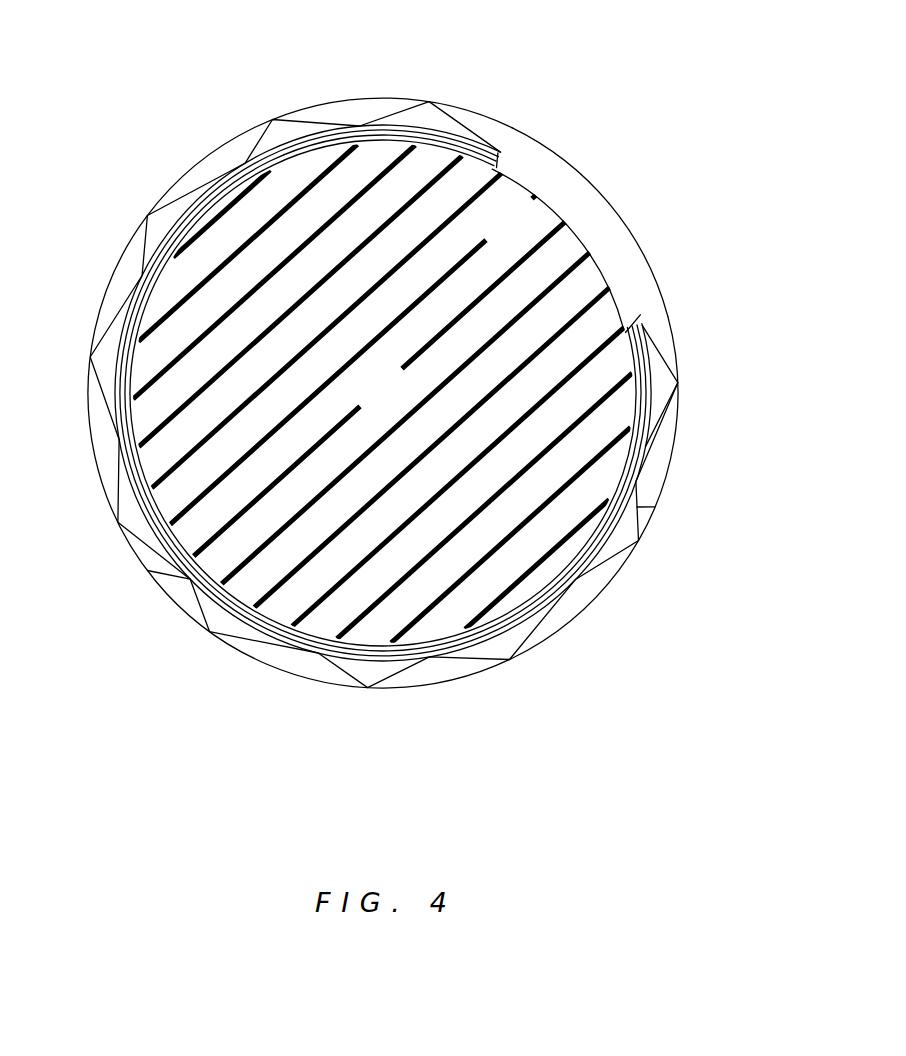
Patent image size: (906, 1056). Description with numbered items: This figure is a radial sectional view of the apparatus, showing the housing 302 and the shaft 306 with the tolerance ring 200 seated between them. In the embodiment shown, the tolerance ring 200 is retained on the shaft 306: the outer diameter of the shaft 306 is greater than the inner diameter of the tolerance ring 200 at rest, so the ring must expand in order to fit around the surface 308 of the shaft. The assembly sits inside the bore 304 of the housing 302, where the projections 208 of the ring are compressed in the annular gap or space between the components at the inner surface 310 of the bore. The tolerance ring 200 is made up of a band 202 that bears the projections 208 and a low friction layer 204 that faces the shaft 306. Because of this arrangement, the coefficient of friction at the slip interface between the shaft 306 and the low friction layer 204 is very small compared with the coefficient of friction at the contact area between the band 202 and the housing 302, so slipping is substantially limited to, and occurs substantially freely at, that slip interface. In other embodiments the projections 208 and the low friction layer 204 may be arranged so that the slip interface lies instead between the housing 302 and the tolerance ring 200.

The tolerance ring 200 is at (366, 106).
The band 202 is at (125, 440).
The low friction layer 204 is at (133, 428).
The projections 208 is at (640, 510).
The housing 302 is at (698, 66).
The bore 304 is at (598, 215).
The shaft 306 is at (403, 407).
The surface of the shaft 308 is at (543, 195).
The inner surface 310 is at (500, 138).